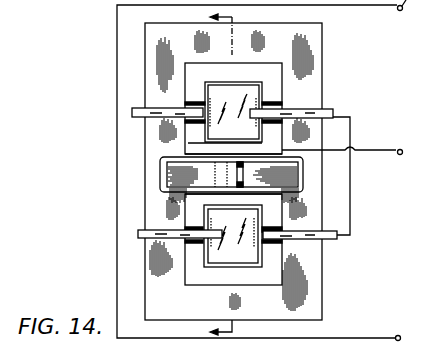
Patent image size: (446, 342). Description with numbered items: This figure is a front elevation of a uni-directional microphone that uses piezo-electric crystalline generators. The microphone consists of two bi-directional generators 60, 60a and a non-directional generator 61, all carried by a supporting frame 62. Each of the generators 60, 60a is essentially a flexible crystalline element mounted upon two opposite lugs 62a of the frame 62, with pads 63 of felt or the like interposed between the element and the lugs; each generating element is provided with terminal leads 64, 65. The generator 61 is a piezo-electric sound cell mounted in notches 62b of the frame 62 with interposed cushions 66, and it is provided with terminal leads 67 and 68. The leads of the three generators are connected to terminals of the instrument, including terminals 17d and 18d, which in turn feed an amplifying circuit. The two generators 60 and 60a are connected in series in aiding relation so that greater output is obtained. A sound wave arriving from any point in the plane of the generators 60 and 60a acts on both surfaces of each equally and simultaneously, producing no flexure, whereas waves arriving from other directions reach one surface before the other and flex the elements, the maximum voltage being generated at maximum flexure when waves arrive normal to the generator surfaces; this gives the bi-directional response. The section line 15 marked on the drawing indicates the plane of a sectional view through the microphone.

The section line 15 is at (237, 174).
The terminal 17d is at (402, 149).
The terminal 18d is at (400, 335).
The bi-directional generator 60 is at (252, 82).
The bi-directional generator 60a is at (252, 267).
The non-directional generator 61 is at (172, 170).
The supporting frame 62 is at (322, 58).
The lugs 62a is at (276, 103).
The notches 62b is at (358, 168).
The pads 63 is at (283, 229).
The terminal lead 64 is at (139, 117).
The terminal lead 65 is at (333, 110).
The cushions 66 is at (163, 183).
The terminal lead 67 is at (218, 160).
The terminal lead 68 is at (243, 175).